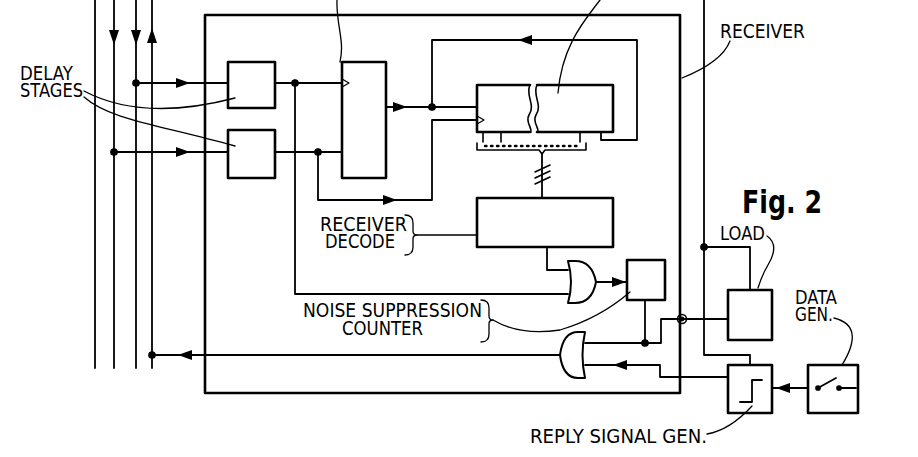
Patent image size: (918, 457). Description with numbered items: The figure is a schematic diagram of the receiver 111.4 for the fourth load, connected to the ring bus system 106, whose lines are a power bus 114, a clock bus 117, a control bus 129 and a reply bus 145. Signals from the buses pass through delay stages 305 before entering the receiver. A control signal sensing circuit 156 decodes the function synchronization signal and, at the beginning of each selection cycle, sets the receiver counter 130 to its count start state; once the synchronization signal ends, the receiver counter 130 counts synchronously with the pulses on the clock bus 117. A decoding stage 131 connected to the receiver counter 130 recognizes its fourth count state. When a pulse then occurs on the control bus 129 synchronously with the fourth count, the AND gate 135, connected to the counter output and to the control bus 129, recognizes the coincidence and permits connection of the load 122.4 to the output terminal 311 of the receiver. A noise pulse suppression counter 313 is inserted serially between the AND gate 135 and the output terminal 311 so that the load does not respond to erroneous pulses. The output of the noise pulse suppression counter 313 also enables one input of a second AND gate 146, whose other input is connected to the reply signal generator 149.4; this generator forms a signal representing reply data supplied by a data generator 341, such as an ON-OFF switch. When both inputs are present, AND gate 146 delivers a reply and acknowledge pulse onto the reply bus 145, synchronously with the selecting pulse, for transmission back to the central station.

The receiver 111.4 is at (310, 375).
The bus system 106 is at (142, 228).
The power bus 114 is at (95, 368).
The clock bus 117 is at (114, 368).
The control bus 129 is at (136, 368).
The reply bus 145 is at (152, 368).
The delay stage 305 is at (246, 70).
The control signal sensing circuit 156 is at (364, 75).
The receiver counter 130 is at (584, 95).
The decoding stage 131 is at (607, 212).
The AND gate 135 is at (572, 291).
The noise pulse suppression counter 313 is at (640, 270).
The output terminal 311 is at (678, 319).
The AND gate 146 is at (562, 362).
The load 122.4 is at (754, 300).
The reply signal generator 149.4 is at (728, 403).
The data generator 341 is at (822, 343).